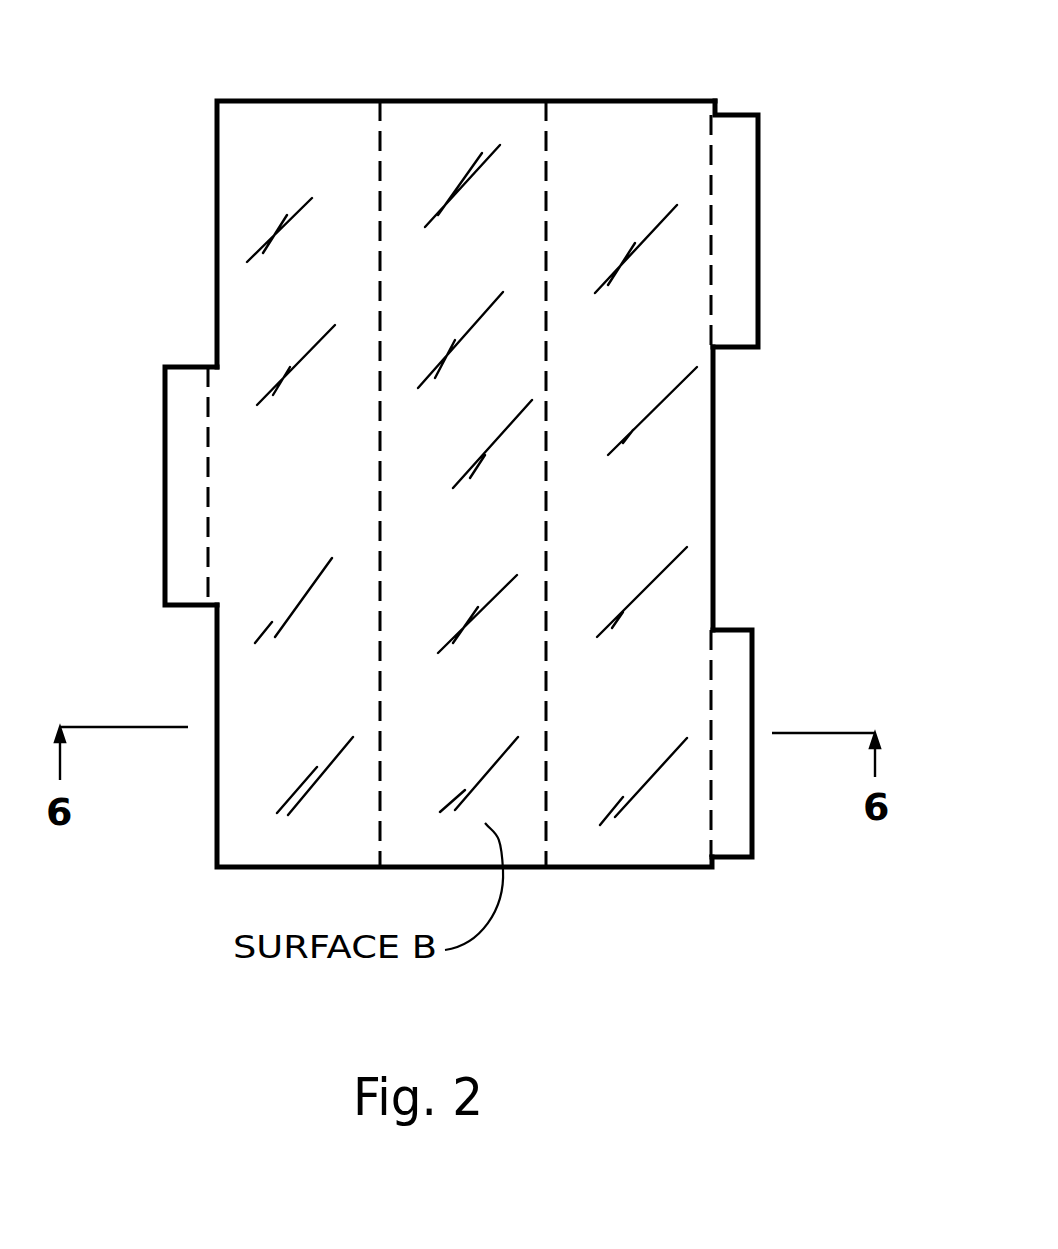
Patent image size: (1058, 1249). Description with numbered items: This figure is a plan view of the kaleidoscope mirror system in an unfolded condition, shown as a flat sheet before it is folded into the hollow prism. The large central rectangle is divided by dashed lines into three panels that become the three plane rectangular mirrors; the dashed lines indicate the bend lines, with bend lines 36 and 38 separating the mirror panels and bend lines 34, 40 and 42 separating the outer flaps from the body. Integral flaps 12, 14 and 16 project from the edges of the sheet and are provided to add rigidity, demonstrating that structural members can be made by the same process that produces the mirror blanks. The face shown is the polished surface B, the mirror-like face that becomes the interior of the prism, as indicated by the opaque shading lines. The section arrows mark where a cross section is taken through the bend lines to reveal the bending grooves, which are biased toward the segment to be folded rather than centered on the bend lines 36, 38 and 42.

The integral flap 12 is at (740, 190).
The integral flap 14 is at (183, 492).
The integral flap 16 is at (732, 668).
The bend line 34 is at (207, 417).
The bend line 36 is at (380, 135).
The bend line 38 is at (547, 135).
The bend line 40 is at (713, 150).
The bend line 42 is at (705, 787).